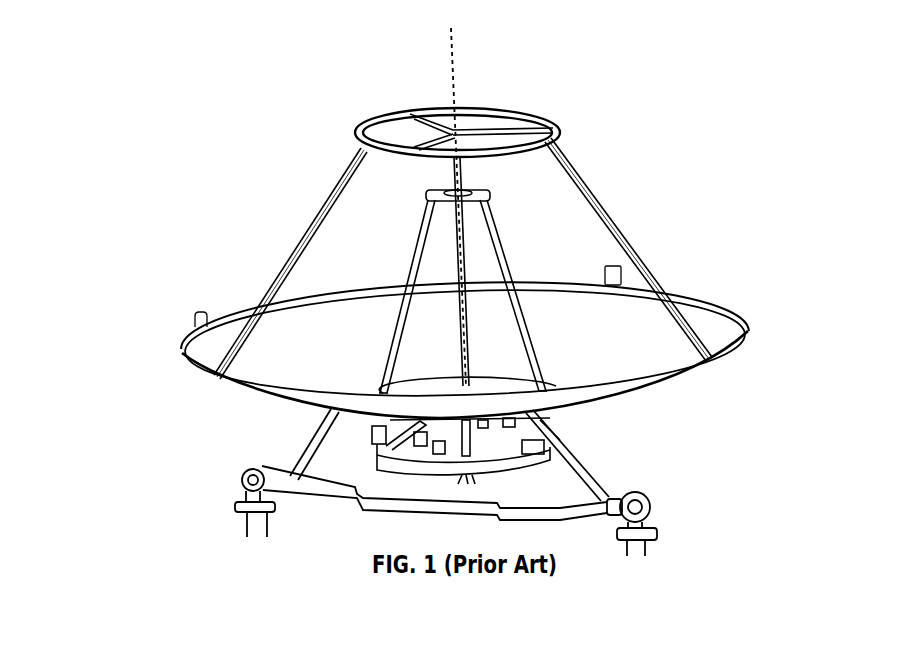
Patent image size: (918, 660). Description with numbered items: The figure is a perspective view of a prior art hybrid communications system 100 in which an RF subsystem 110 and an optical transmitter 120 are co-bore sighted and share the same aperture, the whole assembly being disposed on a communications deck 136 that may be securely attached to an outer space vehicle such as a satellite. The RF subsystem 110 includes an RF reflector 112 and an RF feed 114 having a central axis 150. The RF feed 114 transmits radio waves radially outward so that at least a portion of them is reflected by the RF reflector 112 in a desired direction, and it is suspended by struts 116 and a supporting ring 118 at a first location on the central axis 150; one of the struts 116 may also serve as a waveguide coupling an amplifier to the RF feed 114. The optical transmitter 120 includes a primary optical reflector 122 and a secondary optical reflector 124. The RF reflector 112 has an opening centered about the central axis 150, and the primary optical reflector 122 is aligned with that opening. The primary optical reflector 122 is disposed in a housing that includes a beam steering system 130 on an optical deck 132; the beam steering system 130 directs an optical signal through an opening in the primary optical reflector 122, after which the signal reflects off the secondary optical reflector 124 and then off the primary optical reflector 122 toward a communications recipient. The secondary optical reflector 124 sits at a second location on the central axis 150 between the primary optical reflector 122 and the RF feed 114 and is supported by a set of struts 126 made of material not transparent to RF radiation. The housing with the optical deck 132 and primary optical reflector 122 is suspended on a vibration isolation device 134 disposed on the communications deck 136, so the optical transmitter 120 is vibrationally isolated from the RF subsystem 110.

The hybrid communications system 100 is at (805, 239).
The RF subsystem 110 is at (168, 302).
The RF reflector 112 is at (182, 350).
The RF feed 114 is at (412, 116).
The struts 116 is at (318, 212).
The supporting ring 118 is at (358, 129).
The optical transmitter 120 is at (394, 271).
The primary optical reflector 122 is at (493, 385).
The secondary optical reflector 124 is at (453, 188).
The struts 126 is at (422, 207).
The beam steering system 130 is at (503, 440).
The optical deck 132 is at (363, 447).
The vibration isolation device 134 is at (385, 466).
The communications deck 136 is at (622, 483).
The central axis 150 is at (452, 48).